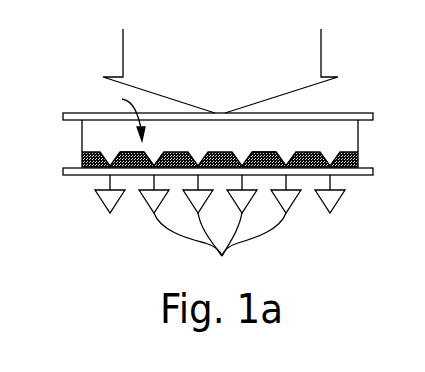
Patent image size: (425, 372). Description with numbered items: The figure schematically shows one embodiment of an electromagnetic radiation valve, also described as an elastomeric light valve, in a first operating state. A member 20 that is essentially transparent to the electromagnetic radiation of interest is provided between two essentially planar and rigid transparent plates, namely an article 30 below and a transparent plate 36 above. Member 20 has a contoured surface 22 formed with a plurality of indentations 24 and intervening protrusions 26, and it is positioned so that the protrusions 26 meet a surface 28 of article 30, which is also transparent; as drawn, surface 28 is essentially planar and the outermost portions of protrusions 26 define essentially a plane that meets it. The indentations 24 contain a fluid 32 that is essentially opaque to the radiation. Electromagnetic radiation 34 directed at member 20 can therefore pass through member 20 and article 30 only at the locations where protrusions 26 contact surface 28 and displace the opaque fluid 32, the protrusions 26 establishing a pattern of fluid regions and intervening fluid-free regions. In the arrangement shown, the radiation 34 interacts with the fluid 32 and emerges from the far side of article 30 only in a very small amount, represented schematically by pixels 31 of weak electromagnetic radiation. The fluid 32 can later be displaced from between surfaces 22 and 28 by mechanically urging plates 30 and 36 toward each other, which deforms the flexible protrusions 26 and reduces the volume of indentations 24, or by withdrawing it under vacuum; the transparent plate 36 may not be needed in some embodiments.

The member 20 is at (80, 127).
The contoured surface 22 is at (118, 114).
The indentations 24 is at (129, 152).
The protrusions 26 is at (151, 165).
The surface 28 is at (77, 163).
The article 30 is at (358, 176).
The pixels 31 is at (100, 197).
The fluid 32 is at (358, 162).
The electromagnetic radiation 34 is at (238, 83).
The transparent plate 36 is at (70, 113).